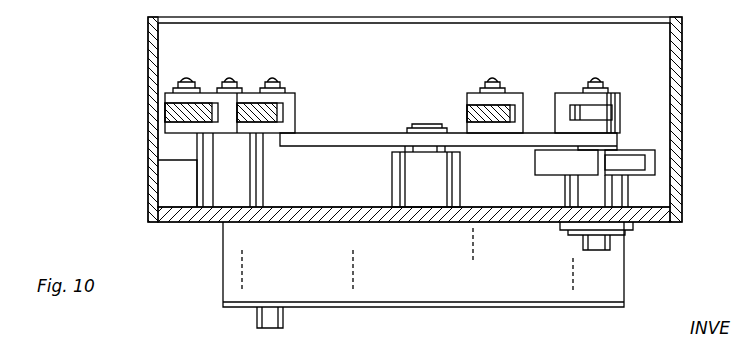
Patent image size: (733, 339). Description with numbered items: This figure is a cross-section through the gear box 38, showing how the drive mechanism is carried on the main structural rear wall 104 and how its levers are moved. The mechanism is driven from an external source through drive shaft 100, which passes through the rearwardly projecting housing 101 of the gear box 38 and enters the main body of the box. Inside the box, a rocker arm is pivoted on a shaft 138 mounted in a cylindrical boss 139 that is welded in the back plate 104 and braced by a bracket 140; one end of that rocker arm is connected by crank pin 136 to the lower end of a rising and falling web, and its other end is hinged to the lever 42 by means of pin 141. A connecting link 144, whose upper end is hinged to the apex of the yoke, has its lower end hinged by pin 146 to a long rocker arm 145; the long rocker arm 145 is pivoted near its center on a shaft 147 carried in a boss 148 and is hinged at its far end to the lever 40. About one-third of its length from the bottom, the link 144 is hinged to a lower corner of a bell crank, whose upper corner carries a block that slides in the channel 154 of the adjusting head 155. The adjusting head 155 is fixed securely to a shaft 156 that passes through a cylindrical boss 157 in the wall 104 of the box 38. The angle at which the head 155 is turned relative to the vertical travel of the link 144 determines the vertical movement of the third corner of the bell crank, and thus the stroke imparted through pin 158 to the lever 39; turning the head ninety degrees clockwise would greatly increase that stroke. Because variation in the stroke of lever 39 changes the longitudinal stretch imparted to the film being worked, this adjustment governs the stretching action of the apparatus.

The gear box 38 is at (678, 95).
The main structural rear wall 104 is at (652, 222).
The bracket 140 is at (167, 179).
The lever 42 is at (170, 114).
The lever 40 is at (250, 110).
The pin 141 is at (176, 82).
The shaft 138 is at (228, 80).
The crank pin 136 is at (274, 80).
The cylindrical boss 139 is at (257, 197).
The long rocker arm 145 is at (352, 141).
The shaft 147 is at (415, 124).
The boss 148 is at (400, 168).
The lever 39 is at (480, 113).
The pin 158 is at (500, 78).
The connecting link 144 is at (612, 110).
The pin 146 is at (595, 78).
The channel 154 is at (642, 160).
The adjusting head 155 is at (540, 164).
The cylindrical boss 157 is at (566, 190).
The rearwardly projecting housing 101 is at (540, 309).
The drive shaft 100 is at (278, 318).
The shaft 156 is at (598, 247).